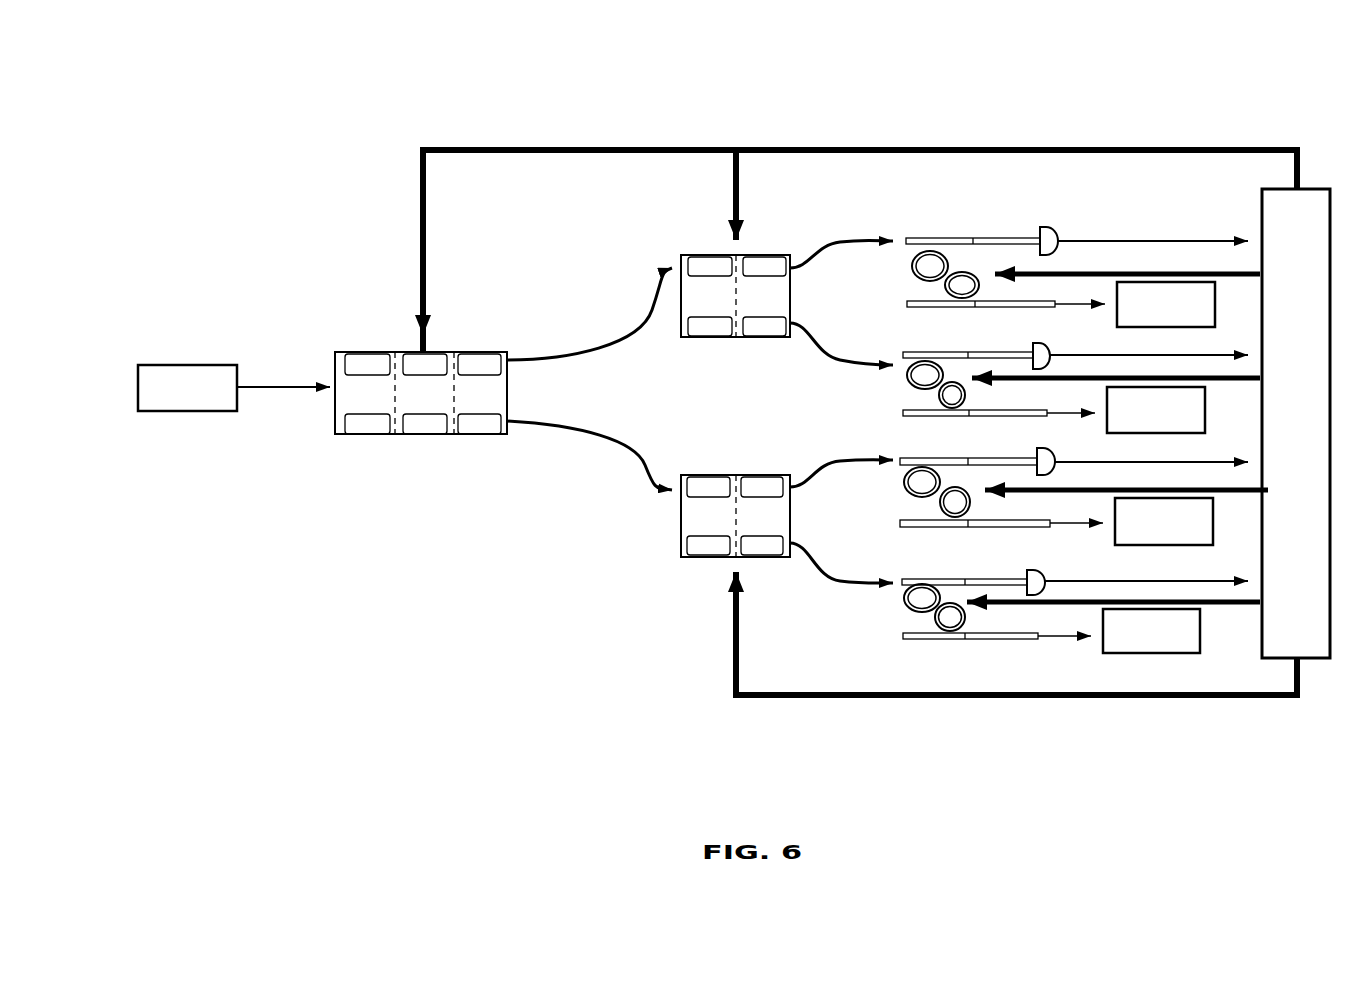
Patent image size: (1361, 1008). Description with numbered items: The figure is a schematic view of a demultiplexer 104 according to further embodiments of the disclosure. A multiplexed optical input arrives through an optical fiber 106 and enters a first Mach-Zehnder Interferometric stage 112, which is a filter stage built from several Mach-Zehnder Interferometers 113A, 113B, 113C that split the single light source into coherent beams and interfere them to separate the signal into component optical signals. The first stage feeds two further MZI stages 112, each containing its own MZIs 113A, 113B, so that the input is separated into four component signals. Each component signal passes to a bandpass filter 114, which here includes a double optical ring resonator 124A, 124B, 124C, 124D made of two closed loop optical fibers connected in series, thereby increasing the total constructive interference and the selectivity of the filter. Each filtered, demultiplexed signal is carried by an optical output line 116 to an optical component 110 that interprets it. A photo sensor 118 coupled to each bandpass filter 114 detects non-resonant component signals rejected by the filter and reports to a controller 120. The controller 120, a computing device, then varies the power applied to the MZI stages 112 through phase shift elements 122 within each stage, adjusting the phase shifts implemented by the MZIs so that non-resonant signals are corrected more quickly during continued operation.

The demultiplexer 104 is at (803, 135).
The optical fiber 106 is at (234, 388).
The optical component 110 is at (1159, 467).
The Mach-Zehnder Interferometric stage 112 is at (346, 336).
The Mach-Zehnder Interferometer 113A is at (357, 397).
The Mach-Zehnder Interferometer 113B is at (404, 397).
The Mach-Zehnder Interferometer 113C is at (500, 397).
The bandpass filter 114 is at (1018, 210).
The optical output line 116 is at (912, 303).
The photo sensor 118 is at (1052, 237).
The controller 120 is at (1296, 423).
The phase shift element 122 is at (494, 360).
The double optical ring resonator 124A is at (940, 250).
The double optical ring resonator 124B is at (941, 362).
The double optical ring resonator 124C is at (942, 470).
The double optical ring resonator 124D is at (942, 590).